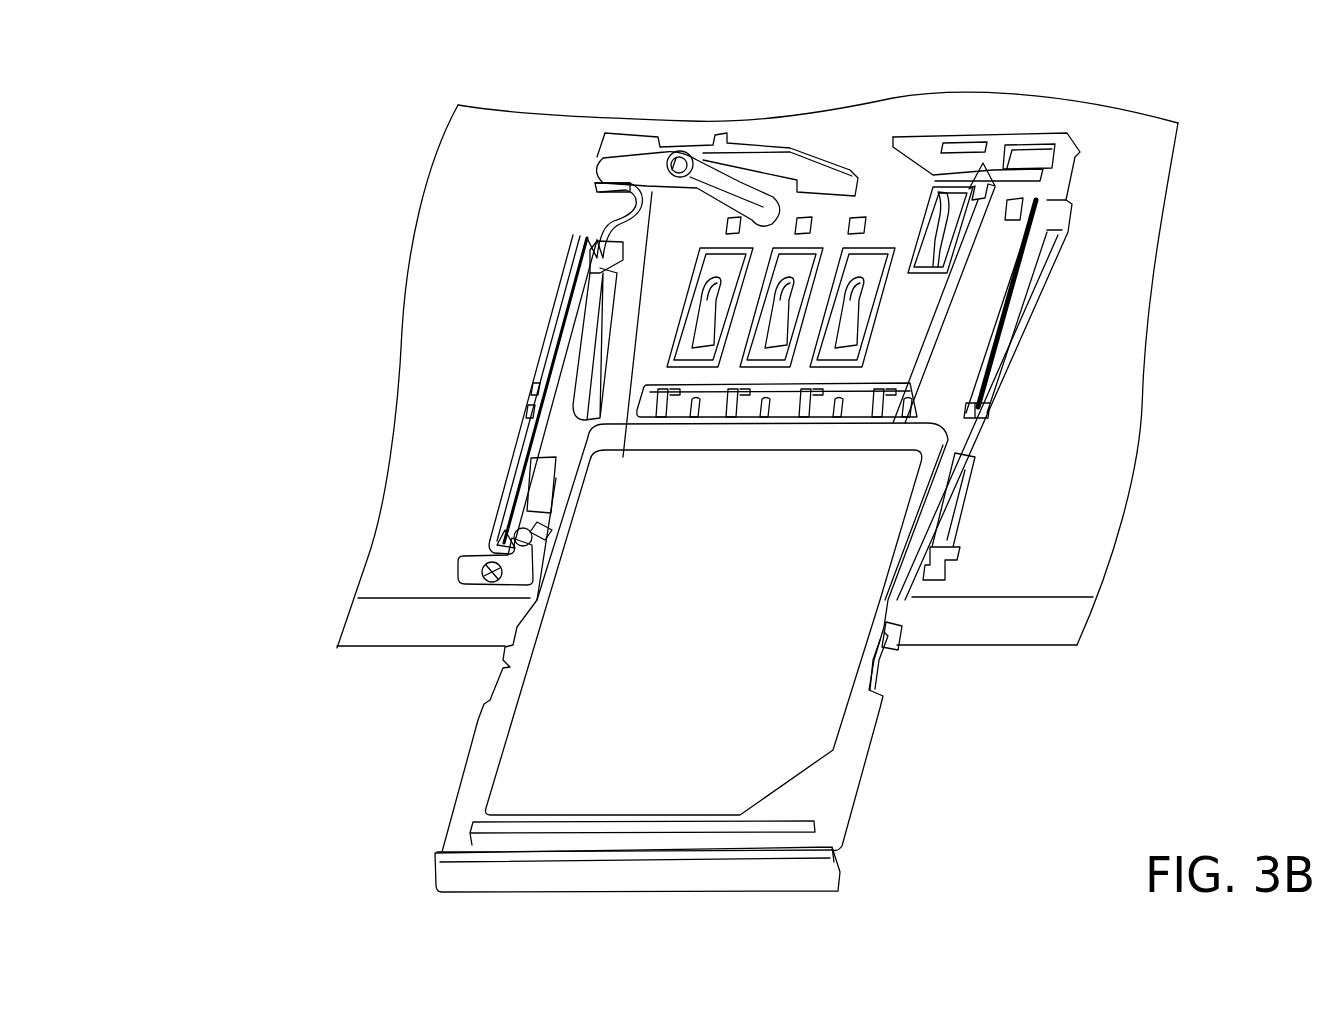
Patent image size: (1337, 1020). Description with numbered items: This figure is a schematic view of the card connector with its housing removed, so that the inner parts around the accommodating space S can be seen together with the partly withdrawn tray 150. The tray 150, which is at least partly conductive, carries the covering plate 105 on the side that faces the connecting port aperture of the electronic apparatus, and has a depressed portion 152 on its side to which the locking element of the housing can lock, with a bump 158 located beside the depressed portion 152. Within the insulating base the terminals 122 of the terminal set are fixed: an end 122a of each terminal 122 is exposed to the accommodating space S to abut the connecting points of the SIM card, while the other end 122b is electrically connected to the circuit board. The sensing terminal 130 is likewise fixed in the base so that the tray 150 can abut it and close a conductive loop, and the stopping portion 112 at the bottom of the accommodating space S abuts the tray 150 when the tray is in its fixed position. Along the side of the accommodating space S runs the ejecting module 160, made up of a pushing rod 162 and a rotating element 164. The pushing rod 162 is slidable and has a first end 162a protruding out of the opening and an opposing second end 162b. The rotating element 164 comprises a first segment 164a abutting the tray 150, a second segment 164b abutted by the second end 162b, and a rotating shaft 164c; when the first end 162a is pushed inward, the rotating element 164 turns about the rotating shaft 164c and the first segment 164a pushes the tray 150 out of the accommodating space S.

The covering plate 105 is at (817, 875).
The stopping portion 112 is at (983, 200).
The terminal 122 is at (945, 364).
The end of the terminal 122a is at (865, 283).
The other end of the terminal 122b is at (887, 407).
The sensing terminal 130 is at (937, 240).
The tray 150 is at (793, 659).
The depressed portion 152 is at (879, 683).
The bump 158 is at (887, 640).
The ejecting module 160 is at (521, 307).
The pushing rod 162 is at (446, 383).
The first end of the pushing rod 162a is at (465, 568).
The second end of the pushing rod 162b is at (593, 182).
The rotating element 164 is at (551, 128).
The first segment 164a is at (793, 138).
The second segment 164b is at (600, 165).
The rotating shaft 164c is at (690, 131).
The accommodating space S is at (517, 512).